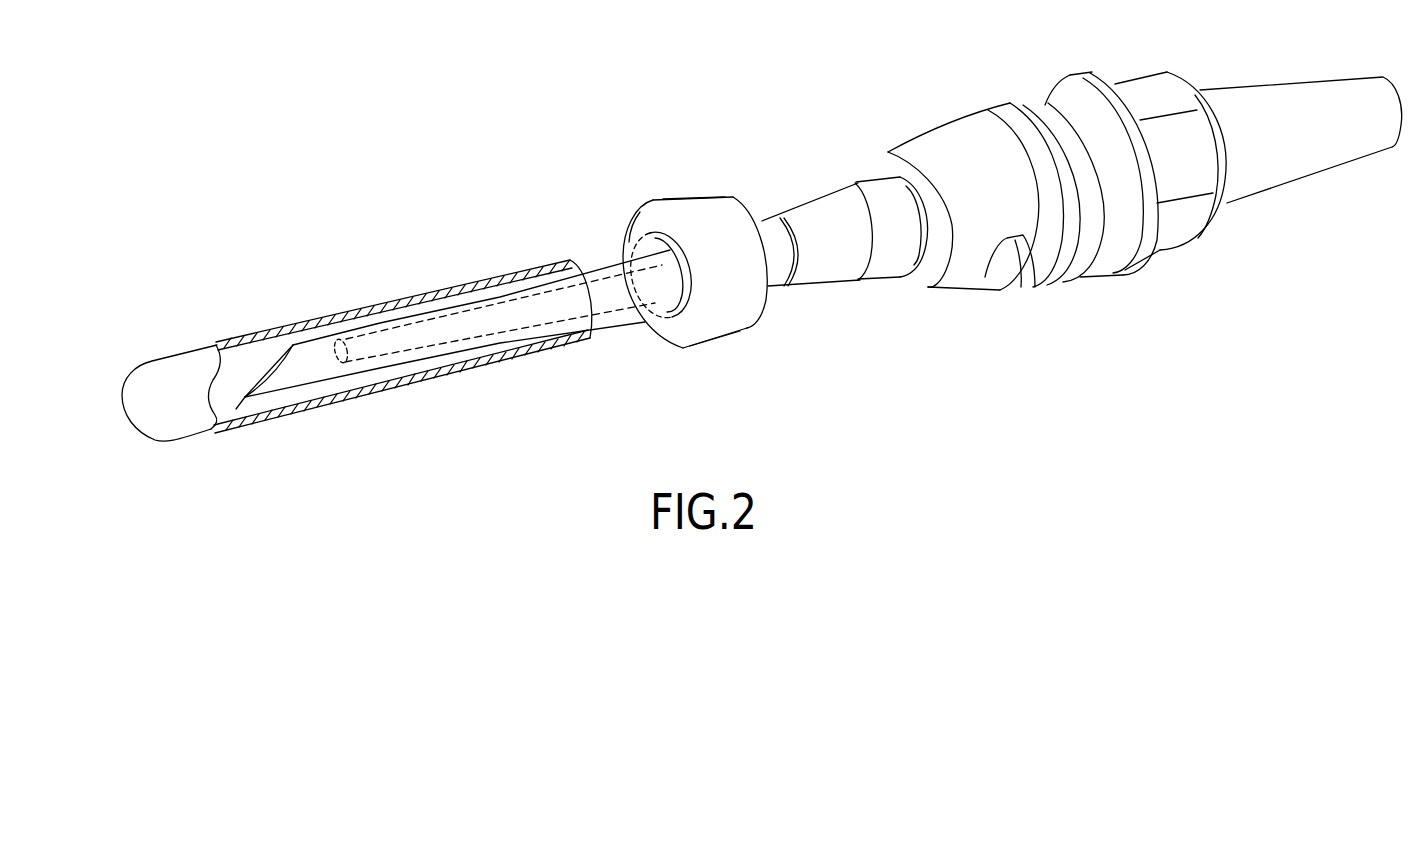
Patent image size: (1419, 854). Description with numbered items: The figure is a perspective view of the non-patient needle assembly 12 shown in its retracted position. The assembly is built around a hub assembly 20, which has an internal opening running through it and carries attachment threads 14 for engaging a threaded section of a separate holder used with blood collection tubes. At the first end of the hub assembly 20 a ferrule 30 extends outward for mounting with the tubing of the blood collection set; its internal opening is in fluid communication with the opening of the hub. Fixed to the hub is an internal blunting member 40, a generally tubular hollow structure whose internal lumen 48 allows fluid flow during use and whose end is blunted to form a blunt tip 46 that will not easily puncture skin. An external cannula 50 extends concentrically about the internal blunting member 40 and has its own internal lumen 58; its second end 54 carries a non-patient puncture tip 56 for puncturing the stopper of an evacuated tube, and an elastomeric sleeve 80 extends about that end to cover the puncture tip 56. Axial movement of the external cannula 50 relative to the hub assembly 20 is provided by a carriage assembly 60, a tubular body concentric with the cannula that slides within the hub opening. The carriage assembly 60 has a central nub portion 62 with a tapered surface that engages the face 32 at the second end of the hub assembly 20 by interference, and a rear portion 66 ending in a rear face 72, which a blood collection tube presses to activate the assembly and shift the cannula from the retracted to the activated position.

The non-patient needle assembly 12 is at (710, 62).
The attachment threads 14 is at (947, 121).
The hub assembly 20 is at (1060, 84).
The ferrule 30 is at (1240, 91).
The face 32 is at (887, 158).
The internal blunting member 40 is at (435, 367).
The blunt tip 46 is at (342, 338).
The internal lumen 48 is at (332, 358).
The external cannula 50 is at (520, 290).
The second end 54 is at (403, 335).
The non-patient puncture tip 56 is at (245, 398).
The internal lumen 58 is at (272, 363).
The carriage assembly 60 is at (728, 335).
The central nub portion 62 is at (830, 286).
The rear portion 66 is at (703, 197).
The rear face 72 is at (671, 266).
The elastomeric sleeve 80 is at (213, 350).